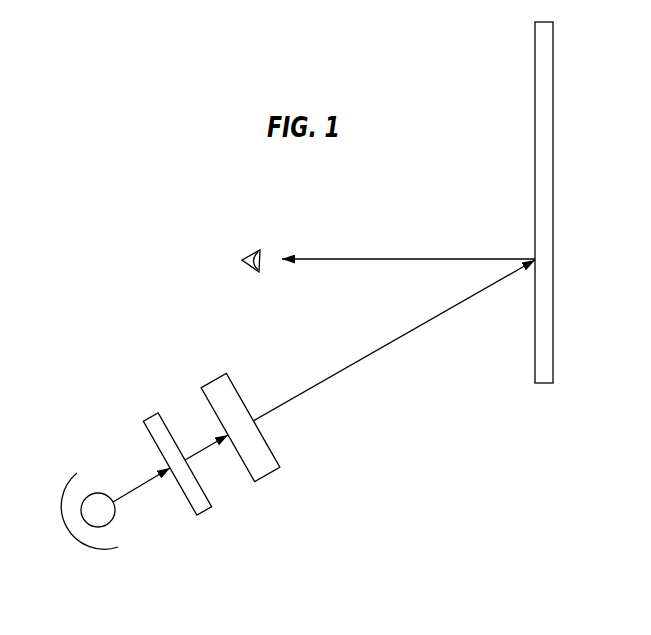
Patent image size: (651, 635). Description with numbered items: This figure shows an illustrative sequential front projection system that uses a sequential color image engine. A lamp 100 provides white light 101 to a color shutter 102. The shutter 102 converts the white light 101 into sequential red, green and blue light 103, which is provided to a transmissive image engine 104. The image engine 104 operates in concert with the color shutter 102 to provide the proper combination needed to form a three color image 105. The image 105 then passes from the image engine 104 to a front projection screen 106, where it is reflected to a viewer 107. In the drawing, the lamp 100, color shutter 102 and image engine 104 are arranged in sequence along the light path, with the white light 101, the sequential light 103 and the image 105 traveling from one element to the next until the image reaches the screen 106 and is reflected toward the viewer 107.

The lamp 100 is at (100, 552).
The white light 101 is at (137, 482).
The color shutter 102 is at (207, 510).
The sequential red, green and blue light 103 is at (197, 448).
The transmissive image engine 104 is at (272, 473).
The three color image 105 is at (352, 363).
The front projection screen 106 is at (547, 385).
The viewer 107 is at (249, 257).